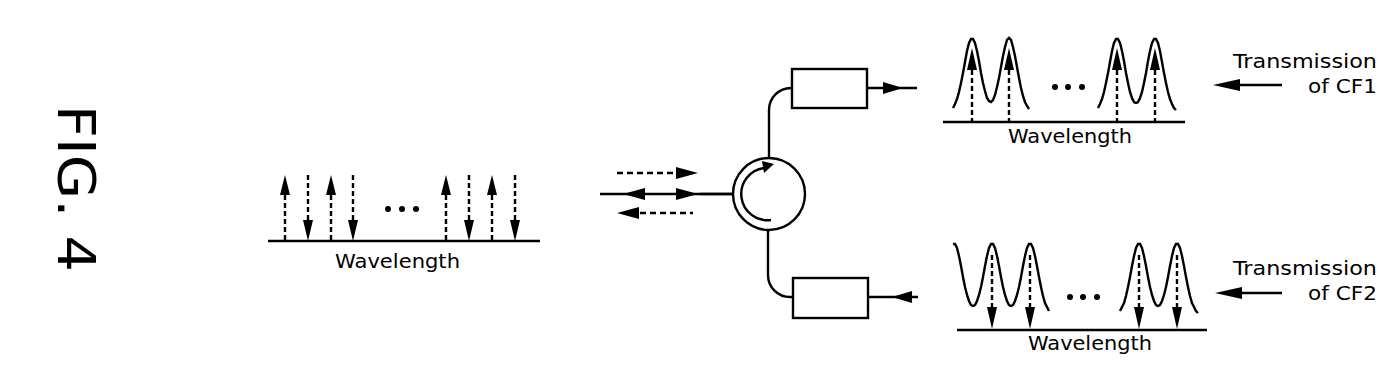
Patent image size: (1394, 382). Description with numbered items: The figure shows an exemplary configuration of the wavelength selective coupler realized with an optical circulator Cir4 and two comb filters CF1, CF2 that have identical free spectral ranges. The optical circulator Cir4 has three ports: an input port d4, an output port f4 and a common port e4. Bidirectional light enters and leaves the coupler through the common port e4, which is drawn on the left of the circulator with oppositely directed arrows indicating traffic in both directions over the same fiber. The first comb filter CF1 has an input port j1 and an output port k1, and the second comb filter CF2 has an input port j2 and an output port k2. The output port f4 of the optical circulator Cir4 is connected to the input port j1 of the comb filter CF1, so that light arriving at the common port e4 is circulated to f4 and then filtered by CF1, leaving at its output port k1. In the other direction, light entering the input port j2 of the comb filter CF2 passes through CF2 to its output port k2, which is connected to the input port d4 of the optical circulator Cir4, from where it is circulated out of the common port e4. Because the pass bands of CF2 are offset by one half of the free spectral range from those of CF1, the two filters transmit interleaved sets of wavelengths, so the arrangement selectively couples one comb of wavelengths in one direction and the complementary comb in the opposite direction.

The optical circulator Cir4 is at (790, 194).
The common port e4 is at (716, 205).
The output port f4 is at (758, 144).
The input port d4 is at (782, 243).
The comb filter CF1 is at (829, 74).
The comb filter CF2 is at (830, 311).
The input port j1 is at (780, 98).
The output port k1 is at (892, 75).
The output port k2 is at (781, 287).
The input port j2 is at (893, 309).